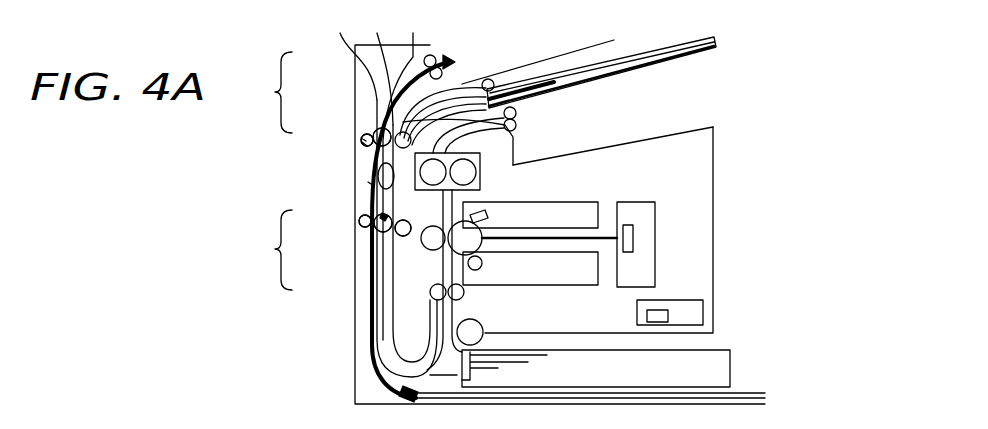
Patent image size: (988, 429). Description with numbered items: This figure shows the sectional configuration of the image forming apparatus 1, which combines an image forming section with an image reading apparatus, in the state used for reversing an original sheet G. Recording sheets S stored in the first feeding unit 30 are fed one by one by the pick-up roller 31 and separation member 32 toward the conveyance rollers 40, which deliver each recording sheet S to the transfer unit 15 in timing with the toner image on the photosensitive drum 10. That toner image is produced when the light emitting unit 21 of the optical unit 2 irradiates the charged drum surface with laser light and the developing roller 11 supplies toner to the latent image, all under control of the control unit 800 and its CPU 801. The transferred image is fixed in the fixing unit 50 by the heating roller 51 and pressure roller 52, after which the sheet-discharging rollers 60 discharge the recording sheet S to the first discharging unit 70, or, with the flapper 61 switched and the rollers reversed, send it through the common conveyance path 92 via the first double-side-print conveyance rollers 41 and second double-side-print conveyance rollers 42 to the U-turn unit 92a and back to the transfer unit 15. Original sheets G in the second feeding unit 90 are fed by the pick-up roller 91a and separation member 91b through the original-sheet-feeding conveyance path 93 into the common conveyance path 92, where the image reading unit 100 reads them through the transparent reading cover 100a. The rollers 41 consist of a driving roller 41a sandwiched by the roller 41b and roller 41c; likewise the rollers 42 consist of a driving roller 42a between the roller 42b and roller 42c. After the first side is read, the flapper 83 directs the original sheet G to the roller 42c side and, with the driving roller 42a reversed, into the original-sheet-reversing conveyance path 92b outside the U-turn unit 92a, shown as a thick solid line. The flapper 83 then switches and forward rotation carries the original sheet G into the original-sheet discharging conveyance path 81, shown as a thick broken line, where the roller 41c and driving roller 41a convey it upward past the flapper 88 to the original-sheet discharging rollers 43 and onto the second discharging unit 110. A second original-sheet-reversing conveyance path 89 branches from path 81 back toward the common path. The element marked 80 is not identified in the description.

The image forming apparatus 1 is at (714, 175).
The optical unit 2 is at (636, 202).
The photosensitive drum 10 is at (488, 218).
The developing roller 11 is at (482, 263).
The transfer unit 15 is at (433, 250).
The light emitting unit 21 is at (634, 230).
The first feeding unit 30 is at (750, 394).
The pick-up roller 31 is at (483, 327).
The separation member 32 is at (406, 390).
The conveyance rollers 40 is at (464, 292).
The first double-side-print conveyance rollers 41 is at (330, 100).
The driving roller 41a is at (374, 132).
The roller 41b is at (386, 130).
The roller 41c is at (362, 137).
The second double-side-print conveyance rollers 42 is at (330, 250).
The driving roller 42a is at (376, 230).
The roller 42b is at (397, 235).
The roller 42c is at (359, 222).
The original-sheet discharging rollers 43 is at (437, 57).
The fixing unit 50 is at (514, 165).
The heating roller 51 is at (476, 172).
The pressure roller 52 is at (433, 160).
The sheet-discharging rollers 60 is at (517, 113).
The flapper 61 is at (514, 143).
The first discharging unit 70 is at (667, 135).
The separation guide 80 is at (458, 95).
The original-sheet discharging conveyance path 81 is at (350, 55).
The flapper 83 is at (370, 185).
The flapper 88 is at (405, 175).
The second original-sheet-reversing conveyance path 89 is at (378, 68).
The second feeding unit 90 is at (646, 53).
The pick-up roller 91a is at (498, 85).
The separation member 91b is at (543, 94).
The common conveyance path 92 is at (400, 190).
The U-turn unit 92a is at (387, 345).
The original-sheet-reversing conveyance path 92b is at (367, 358).
The original-sheet-feeding conveyance path 93 is at (489, 79).
The image reading unit 100 is at (380, 170).
The reading cover 100a is at (363, 143).
The second discharging unit 110 is at (582, 49).
The control unit 800 is at (682, 300).
The CPU 801 is at (668, 316).
The original sheet G is at (685, 43).
The recording sheet S is at (729, 357).